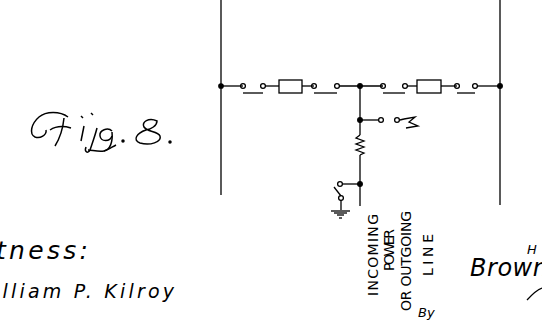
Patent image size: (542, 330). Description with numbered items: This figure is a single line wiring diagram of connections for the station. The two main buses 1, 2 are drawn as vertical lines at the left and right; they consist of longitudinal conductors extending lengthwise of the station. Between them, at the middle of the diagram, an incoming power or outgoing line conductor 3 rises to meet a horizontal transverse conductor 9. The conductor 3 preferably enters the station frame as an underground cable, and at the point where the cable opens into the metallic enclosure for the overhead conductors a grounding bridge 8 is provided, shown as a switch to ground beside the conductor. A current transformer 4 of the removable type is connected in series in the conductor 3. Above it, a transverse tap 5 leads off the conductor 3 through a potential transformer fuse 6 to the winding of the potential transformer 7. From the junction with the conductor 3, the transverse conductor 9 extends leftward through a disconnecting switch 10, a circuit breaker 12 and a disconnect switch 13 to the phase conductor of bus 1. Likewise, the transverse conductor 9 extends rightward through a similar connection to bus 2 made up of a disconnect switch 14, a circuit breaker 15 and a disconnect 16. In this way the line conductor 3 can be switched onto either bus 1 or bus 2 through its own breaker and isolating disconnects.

The main bus 1 is at (222, 26).
The main bus 2 is at (491, 102).
The conductor 3 is at (362, 197).
The current transformer 4 is at (350, 144).
The transverse tap 5 is at (381, 123).
The potential transformer fuse 6 is at (397, 123).
The potential transformer 7 is at (421, 125).
The grounding bridge 8 is at (331, 192).
The horizontal transverse conductor 9 is at (364, 83).
The disconnecting switch 10 is at (323, 82).
The circuit breaker 12 is at (290, 78).
The disconnect switch 13 is at (249, 82).
The disconnect switch 14 is at (392, 83).
The circuit breaker 15 is at (425, 80).
The disconnect 16 is at (463, 88).